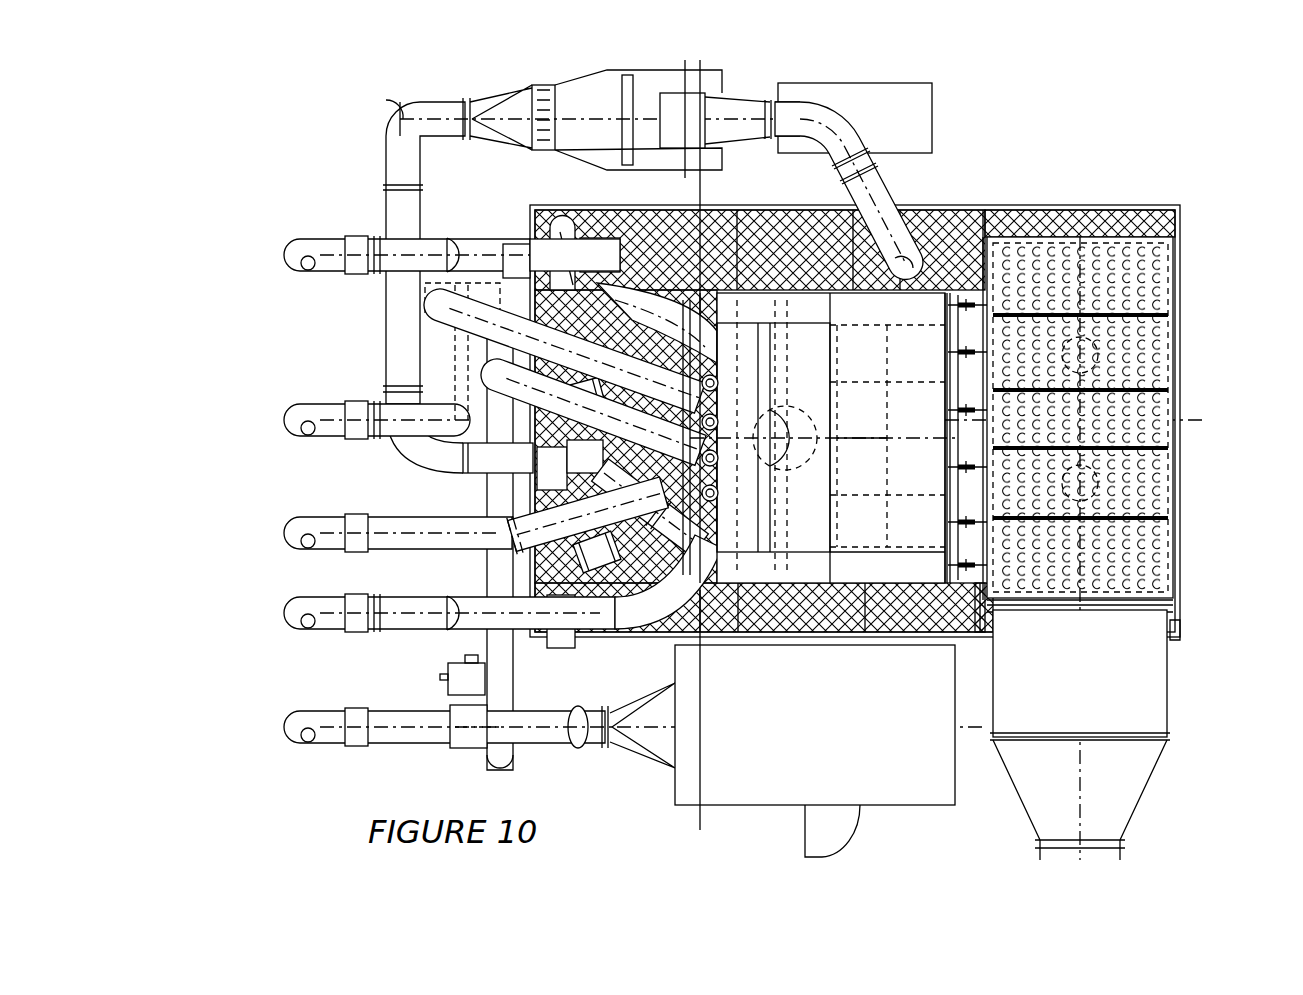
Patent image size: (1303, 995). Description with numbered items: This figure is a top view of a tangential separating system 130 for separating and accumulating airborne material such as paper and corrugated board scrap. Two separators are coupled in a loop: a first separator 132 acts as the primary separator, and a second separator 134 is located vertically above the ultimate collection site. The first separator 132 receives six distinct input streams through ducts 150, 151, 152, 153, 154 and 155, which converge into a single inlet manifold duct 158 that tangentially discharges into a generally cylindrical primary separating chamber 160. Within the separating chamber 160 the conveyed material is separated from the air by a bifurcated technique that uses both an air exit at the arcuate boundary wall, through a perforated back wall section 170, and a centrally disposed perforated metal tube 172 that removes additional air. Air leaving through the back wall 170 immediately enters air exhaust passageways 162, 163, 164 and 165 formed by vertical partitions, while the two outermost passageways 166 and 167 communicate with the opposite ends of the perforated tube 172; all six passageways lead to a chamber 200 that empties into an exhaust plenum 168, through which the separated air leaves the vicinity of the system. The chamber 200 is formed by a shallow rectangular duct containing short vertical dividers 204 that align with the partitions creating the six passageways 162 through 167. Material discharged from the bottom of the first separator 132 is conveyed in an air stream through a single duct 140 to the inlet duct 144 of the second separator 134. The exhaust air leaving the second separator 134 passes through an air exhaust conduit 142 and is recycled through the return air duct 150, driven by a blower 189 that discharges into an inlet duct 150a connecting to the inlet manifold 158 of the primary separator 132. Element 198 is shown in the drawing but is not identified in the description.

The tangential separating system 130 is at (312, 117).
The first separator 132 is at (928, 302).
The second separator 134 is at (788, 80).
The duct 140 is at (820, 190).
The air exhaust conduit 142 is at (535, 105).
The inlet duct 144 is at (692, 75).
The return air duct 150 is at (398, 178).
The inlet duct 150a is at (470, 390).
The duct 151 is at (330, 408).
The duct 152 is at (330, 245).
The duct 153 is at (330, 545).
The duct 154 is at (330, 622).
The duct 155 is at (330, 737).
The inlet manifold duct 158 is at (697, 215).
The primary separating chamber 160 is at (828, 529).
The air exhaust passageway 162 is at (935, 364).
The air exhaust passageway 163 is at (935, 424).
The air exhaust passageway 164 is at (935, 491).
The air exhaust passageway 165 is at (935, 522).
The outermost air exhaust passageway 166 is at (885, 316).
The outermost air exhaust passageway 167 is at (883, 577).
The exhaust plenum 168 is at (1125, 290).
The perforated back wall section 170 is at (912, 640).
The perforated metal tube 172 is at (883, 233).
The blower 189 is at (540, 480).
The feed hopper box 198 is at (932, 108).
The chamber 200 is at (963, 600).
The vertical dividers 204 is at (952, 438).